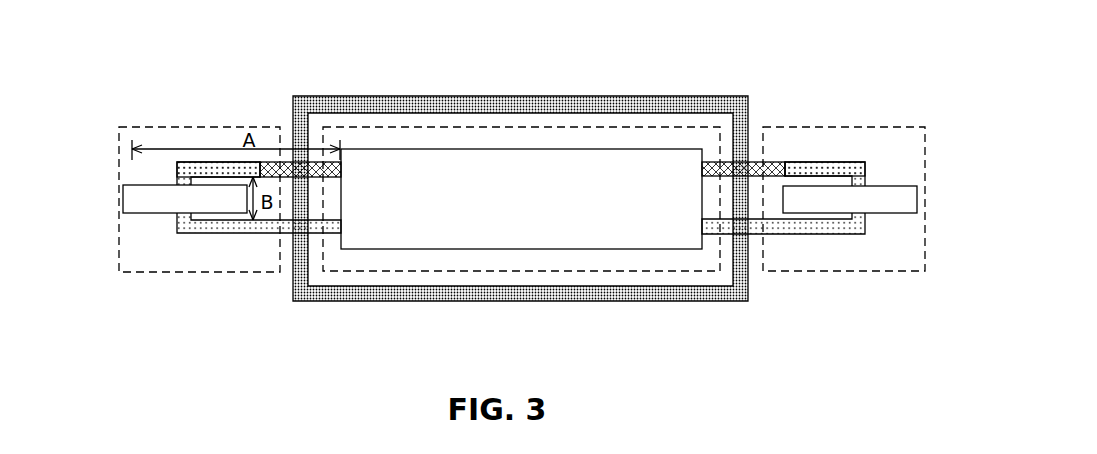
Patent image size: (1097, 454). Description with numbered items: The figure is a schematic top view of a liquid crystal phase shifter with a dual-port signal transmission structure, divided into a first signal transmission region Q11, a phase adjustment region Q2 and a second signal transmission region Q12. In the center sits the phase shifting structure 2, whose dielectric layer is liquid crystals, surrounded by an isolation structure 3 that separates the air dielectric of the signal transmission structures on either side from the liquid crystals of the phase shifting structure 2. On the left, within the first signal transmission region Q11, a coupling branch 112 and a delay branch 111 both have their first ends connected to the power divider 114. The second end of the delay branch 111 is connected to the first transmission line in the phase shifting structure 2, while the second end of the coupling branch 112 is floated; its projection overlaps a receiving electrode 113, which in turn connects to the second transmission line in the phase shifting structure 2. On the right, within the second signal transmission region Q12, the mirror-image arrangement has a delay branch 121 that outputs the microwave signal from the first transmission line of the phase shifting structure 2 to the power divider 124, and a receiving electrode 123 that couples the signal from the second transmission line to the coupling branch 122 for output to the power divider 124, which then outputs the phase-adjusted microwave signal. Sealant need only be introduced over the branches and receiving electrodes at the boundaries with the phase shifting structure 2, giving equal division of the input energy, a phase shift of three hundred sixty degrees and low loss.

The phase shifting structure 2 is at (625, 149).
The isolation structure 3 is at (540, 97).
The delay branch 111 is at (197, 223).
The coupling branch 112 is at (208, 167).
The receiving electrode 113 is at (280, 168).
The power divider 114 is at (130, 213).
The delay branch 121 is at (807, 227).
The coupling branch 122 is at (823, 170).
The receiving electrode 123 is at (754, 168).
The power divider 124 is at (885, 213).
The first signal transmission region Q11 is at (208, 273).
The second signal transmission region Q12 is at (850, 272).
The phase adjustment region Q2 is at (468, 271).